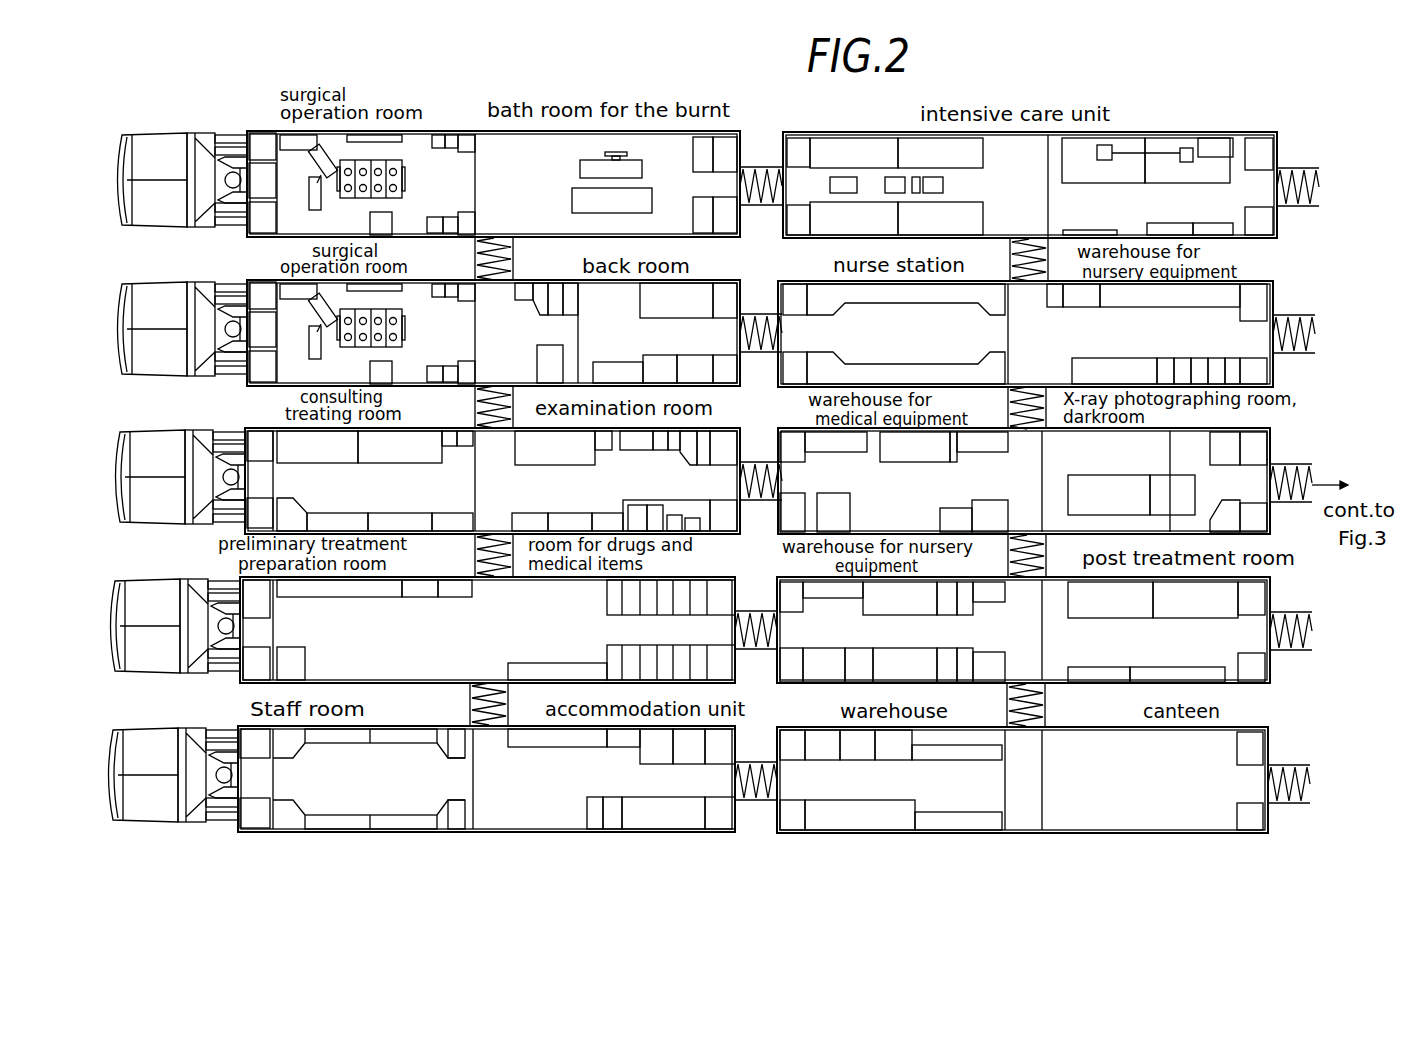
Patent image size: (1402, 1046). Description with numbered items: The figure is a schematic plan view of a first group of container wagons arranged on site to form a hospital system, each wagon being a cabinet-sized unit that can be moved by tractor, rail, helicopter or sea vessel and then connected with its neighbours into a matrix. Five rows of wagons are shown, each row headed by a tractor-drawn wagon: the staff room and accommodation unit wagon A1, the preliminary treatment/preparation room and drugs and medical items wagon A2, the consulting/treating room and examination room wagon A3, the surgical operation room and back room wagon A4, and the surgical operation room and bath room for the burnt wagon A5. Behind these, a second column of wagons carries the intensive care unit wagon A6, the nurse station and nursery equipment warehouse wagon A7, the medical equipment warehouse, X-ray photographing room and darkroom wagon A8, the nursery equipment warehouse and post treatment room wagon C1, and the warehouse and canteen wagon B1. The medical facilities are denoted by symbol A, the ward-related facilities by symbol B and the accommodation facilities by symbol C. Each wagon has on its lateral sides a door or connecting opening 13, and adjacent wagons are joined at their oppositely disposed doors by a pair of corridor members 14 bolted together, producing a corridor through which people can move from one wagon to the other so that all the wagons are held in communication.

The container wagon No. A1 is at (247, 733).
The container wagon No. A2 is at (246, 583).
The container wagon No. A3 is at (253, 432).
The container wagon No. A4 is at (258, 285).
The container wagon No. A5 is at (257, 131).
The container wagon No. A6 is at (1267, 145).
The container wagon No. A7 is at (1258, 292).
The container wagon No. A8 is at (1258, 445).
The container wagon No. B1 is at (1268, 743).
The container wagon No. C1 is at (1258, 592).
The door (connecting opening) 13 is at (735, 783).
The corridor member 14 is at (757, 803).